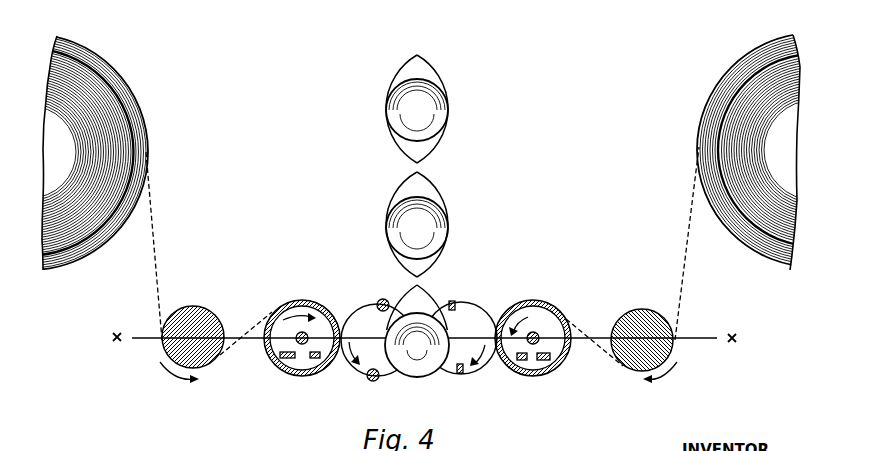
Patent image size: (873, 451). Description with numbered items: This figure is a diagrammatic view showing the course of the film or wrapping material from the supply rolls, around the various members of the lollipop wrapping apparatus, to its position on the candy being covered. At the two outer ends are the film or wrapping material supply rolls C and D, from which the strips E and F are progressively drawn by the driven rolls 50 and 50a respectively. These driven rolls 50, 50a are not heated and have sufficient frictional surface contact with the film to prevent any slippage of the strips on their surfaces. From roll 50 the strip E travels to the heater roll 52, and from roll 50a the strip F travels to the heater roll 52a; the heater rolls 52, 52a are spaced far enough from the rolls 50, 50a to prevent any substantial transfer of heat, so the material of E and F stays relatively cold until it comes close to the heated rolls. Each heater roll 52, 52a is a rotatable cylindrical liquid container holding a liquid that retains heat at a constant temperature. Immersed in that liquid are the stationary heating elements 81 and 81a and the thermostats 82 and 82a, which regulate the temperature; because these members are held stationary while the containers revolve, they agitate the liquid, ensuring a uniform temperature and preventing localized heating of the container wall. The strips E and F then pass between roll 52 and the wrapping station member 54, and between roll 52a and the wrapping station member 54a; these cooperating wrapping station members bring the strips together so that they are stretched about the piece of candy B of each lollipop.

The piece of candy B is at (447, 115).
The film or wrapping material supply roll C is at (115, 108).
The film or wrapping material supply roll D is at (719, 105).
The strip E is at (153, 219).
The strip F is at (687, 223).
The driven roll 50 is at (193, 318).
The driven roll 50a is at (650, 311).
The heater roll 52 is at (289, 339).
The heater roll 52a is at (538, 338).
The wrapping station member 54 is at (360, 308).
The wrapping station member 54a is at (468, 312).
The heating element 81 is at (272, 365).
The heating element 81a is at (553, 366).
The thermostat 82 is at (315, 361).
The thermostat 82a is at (522, 368).